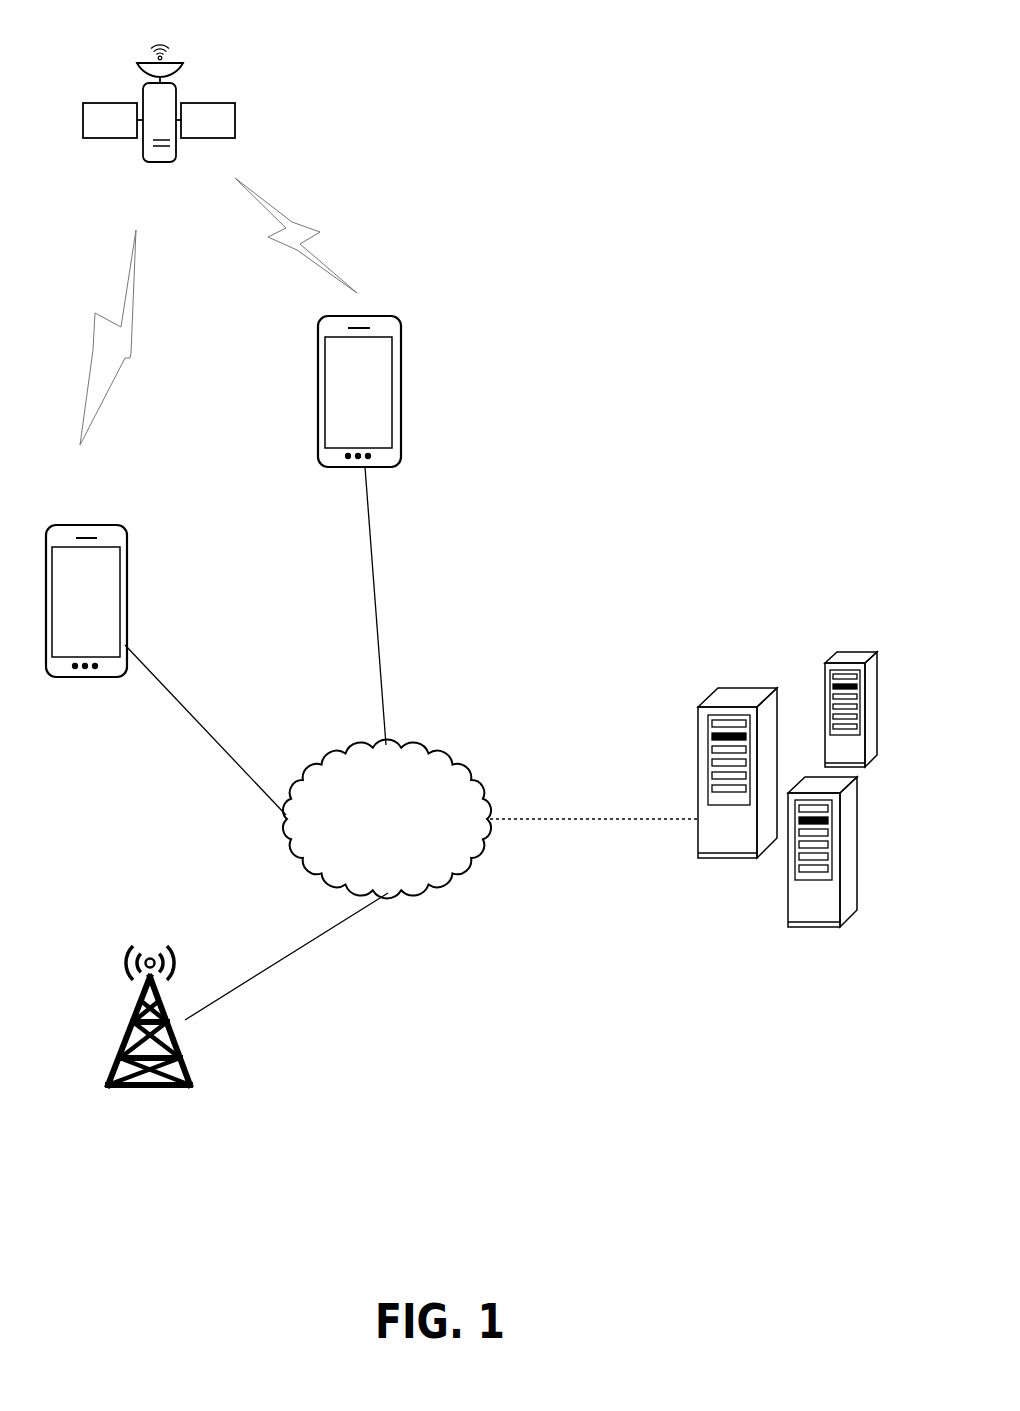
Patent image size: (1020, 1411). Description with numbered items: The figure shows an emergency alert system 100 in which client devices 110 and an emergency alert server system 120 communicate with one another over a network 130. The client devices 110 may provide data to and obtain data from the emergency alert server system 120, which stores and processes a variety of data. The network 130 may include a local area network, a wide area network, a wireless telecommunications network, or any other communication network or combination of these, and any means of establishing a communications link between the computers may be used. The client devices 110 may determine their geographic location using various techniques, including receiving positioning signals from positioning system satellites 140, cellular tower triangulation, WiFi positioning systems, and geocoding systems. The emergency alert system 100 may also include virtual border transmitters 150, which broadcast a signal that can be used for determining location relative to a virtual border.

The emergency alert system 100 is at (726, 80).
The client device 110 is at (397, 318).
The emergency alert server system 120 is at (738, 697).
The network 130 is at (387, 745).
The positioning system satellite 140 is at (180, 103).
The virtual border transmitter 150 is at (190, 1085).